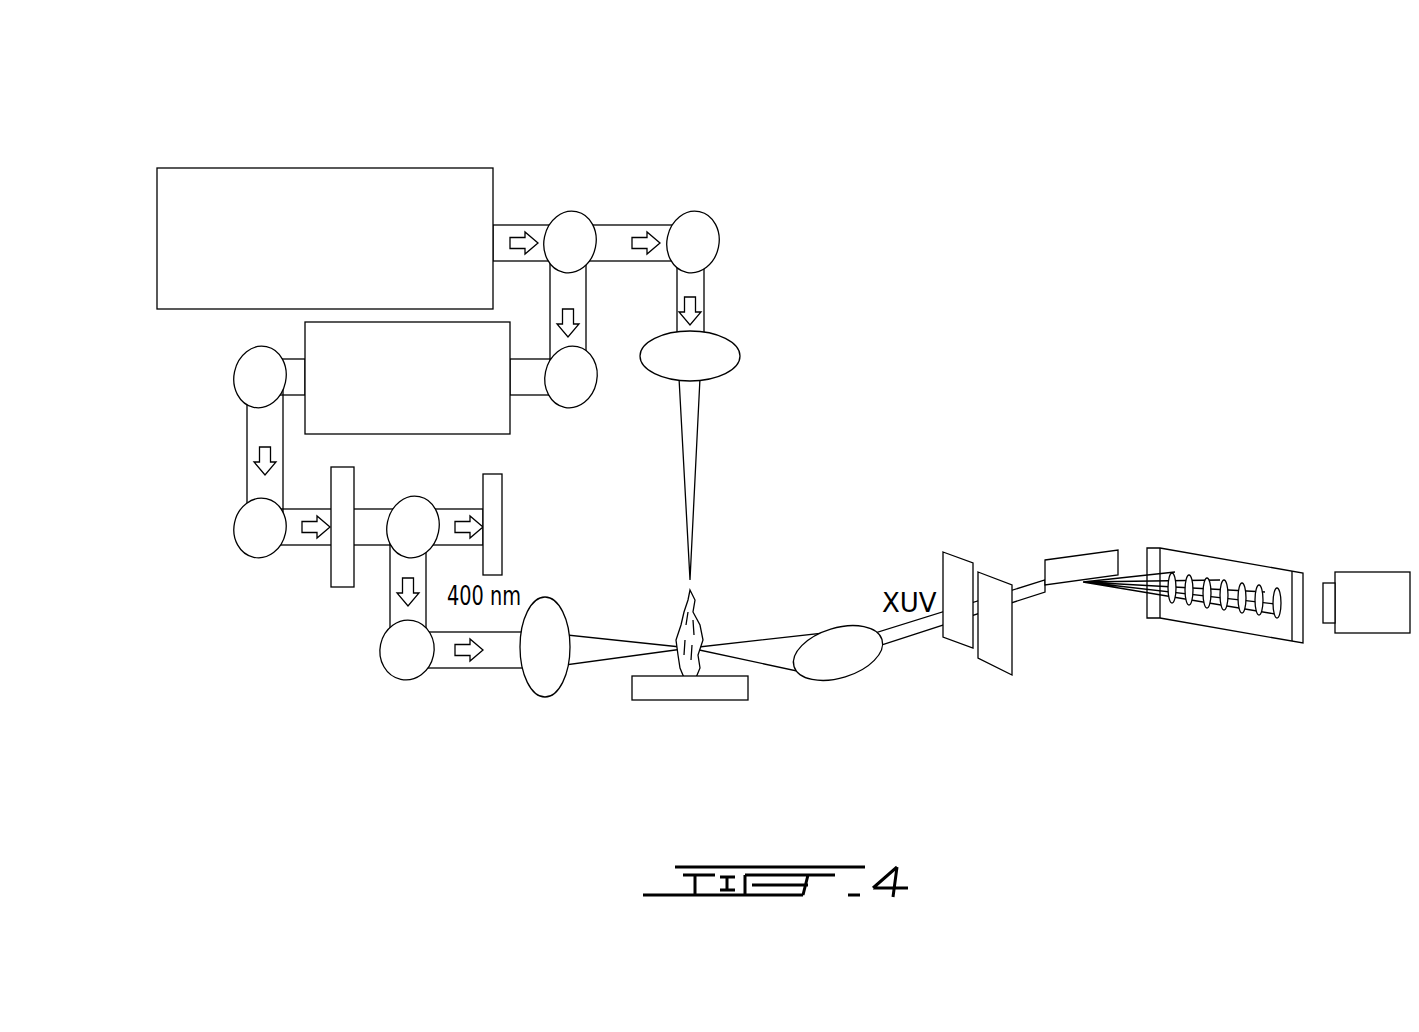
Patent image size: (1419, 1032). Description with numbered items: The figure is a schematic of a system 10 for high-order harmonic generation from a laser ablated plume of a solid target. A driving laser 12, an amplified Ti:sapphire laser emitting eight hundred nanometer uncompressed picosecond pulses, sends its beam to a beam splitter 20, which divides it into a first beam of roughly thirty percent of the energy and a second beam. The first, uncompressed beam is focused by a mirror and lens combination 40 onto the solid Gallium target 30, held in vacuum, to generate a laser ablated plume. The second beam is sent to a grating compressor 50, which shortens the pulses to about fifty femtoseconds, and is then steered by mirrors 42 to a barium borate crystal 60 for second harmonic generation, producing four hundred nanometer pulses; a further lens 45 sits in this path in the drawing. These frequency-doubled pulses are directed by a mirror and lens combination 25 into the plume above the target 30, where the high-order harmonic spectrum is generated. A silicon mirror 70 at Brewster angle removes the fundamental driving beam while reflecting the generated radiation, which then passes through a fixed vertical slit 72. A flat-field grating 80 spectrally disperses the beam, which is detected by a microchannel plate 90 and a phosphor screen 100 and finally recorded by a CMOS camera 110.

The system 10 is at (1118, 212).
The driving laser 12 is at (318, 197).
The beam splitter 20 is at (565, 240).
The mirror and lens combination 25 is at (577, 706).
The solid target 30 is at (690, 702).
The mirror and lens combination 40 is at (697, 237).
The mirrors 42 is at (305, 585).
The lens 45 is at (423, 520).
The grating compressor 50 is at (320, 340).
The barium borate crystal 60 is at (341, 578).
The silicon mirror 70 is at (840, 655).
The fixed vertical slit 72 is at (996, 657).
The flat-field grating 80 is at (1078, 565).
The microchannel plate 90 is at (1225, 560).
The phosphor screen 100 is at (1220, 617).
The CMOS camera 110 is at (1373, 610).